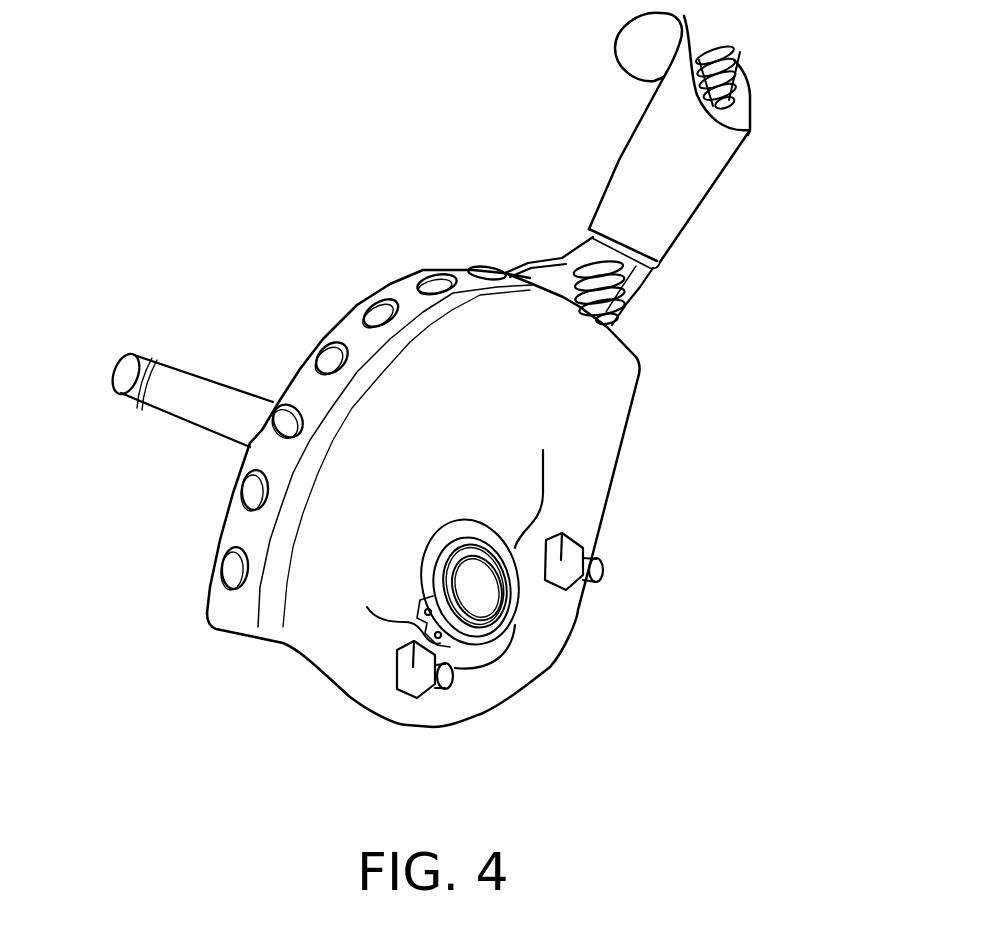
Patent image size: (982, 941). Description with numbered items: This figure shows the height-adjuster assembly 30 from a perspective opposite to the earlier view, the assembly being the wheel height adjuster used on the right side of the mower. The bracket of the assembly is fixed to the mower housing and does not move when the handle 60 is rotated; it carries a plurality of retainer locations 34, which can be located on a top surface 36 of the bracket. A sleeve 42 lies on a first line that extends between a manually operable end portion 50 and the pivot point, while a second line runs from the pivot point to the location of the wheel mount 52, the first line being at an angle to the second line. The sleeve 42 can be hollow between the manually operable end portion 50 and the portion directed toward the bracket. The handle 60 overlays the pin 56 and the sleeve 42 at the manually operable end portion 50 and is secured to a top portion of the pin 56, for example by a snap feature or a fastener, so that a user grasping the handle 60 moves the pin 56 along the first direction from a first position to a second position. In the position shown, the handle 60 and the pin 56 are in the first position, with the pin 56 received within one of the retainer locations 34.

The height-adjuster assembly 30 is at (254, 303).
The retainer locations 34 is at (243, 490).
The top surface 36 is at (236, 632).
The sleeve 42 is at (548, 250).
The manually operable end portion 50 is at (742, 185).
The wheel mount 52 is at (118, 370).
The pin 56 is at (746, 67).
The handle 60 is at (752, 160).